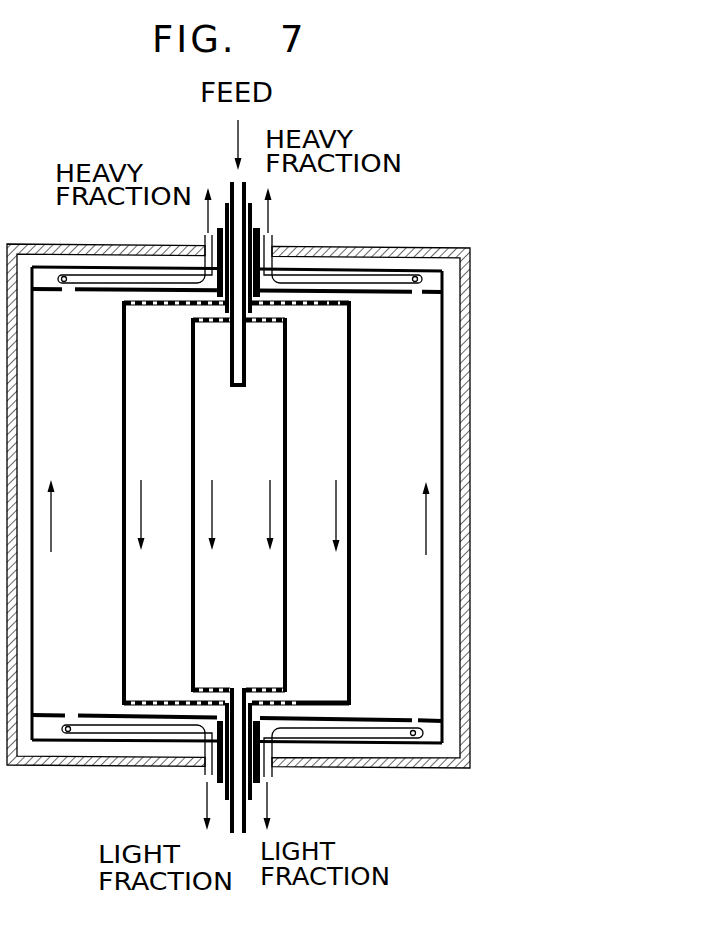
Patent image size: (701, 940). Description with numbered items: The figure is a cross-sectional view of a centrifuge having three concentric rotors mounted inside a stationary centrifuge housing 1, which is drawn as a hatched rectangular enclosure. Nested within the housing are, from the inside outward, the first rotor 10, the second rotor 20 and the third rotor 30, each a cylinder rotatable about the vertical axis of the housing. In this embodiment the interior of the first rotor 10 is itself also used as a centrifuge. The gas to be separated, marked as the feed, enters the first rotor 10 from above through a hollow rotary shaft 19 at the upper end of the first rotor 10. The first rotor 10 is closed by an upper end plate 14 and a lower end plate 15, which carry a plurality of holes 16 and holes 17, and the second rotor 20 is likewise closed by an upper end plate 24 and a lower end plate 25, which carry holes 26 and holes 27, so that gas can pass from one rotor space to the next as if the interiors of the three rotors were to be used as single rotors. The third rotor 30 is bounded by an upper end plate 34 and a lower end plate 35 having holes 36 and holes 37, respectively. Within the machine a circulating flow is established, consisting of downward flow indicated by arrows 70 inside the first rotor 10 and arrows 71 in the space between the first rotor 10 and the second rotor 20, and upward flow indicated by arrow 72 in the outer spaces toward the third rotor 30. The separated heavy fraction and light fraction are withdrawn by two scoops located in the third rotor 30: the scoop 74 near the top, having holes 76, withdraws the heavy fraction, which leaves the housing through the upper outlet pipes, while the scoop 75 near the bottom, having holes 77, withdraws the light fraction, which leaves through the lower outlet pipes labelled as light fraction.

The centrifuge housing 1 is at (471, 500).
The first rotor 10 is at (286, 566).
The upper end plate of the first rotor 14 is at (251, 322).
The lower end plate of the first rotor 15 is at (212, 687).
The holes 16 is at (212, 322).
The holes 17 is at (232, 687).
The hollow rotary shaft 19 is at (247, 372).
The second rotor 20 is at (352, 566).
The upper end plate of the second rotor 24 is at (316, 306).
The lower end plate of the second rotor 25 is at (300, 700).
The holes 26 is at (340, 306).
The holes 27 is at (327, 695).
The third rotor 30 is at (442, 598).
The end plate of the third rotor 34 is at (378, 296).
The end plate of the third rotor 35 is at (375, 718).
The holes 36 is at (415, 295).
The holes 37 is at (415, 719).
The arrows 70 is at (213, 500).
The arrows 71 is at (143, 500).
The arrow 72 is at (52, 525).
The scoop 74 is at (366, 279).
The scoop 75 is at (357, 731).
The holes 76 is at (416, 279).
The holes 77 is at (418, 737).